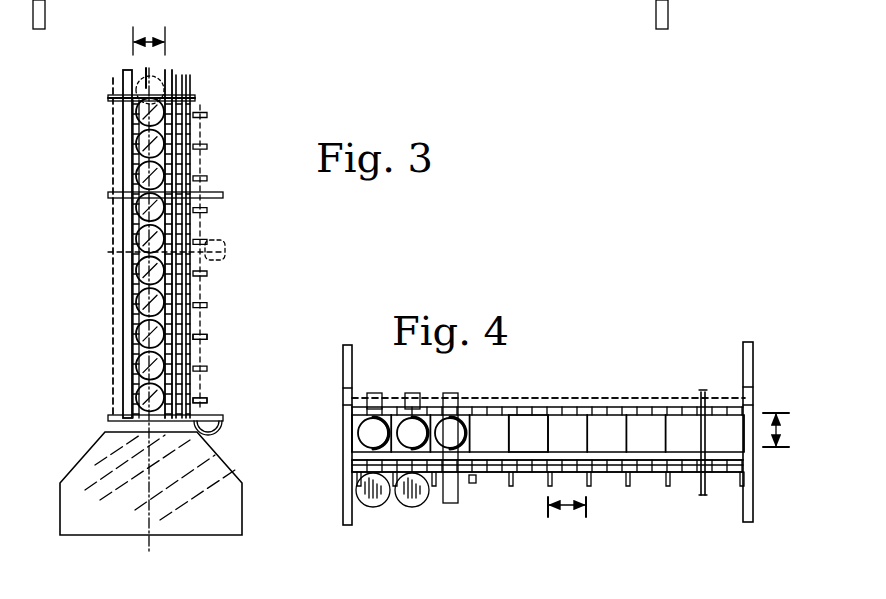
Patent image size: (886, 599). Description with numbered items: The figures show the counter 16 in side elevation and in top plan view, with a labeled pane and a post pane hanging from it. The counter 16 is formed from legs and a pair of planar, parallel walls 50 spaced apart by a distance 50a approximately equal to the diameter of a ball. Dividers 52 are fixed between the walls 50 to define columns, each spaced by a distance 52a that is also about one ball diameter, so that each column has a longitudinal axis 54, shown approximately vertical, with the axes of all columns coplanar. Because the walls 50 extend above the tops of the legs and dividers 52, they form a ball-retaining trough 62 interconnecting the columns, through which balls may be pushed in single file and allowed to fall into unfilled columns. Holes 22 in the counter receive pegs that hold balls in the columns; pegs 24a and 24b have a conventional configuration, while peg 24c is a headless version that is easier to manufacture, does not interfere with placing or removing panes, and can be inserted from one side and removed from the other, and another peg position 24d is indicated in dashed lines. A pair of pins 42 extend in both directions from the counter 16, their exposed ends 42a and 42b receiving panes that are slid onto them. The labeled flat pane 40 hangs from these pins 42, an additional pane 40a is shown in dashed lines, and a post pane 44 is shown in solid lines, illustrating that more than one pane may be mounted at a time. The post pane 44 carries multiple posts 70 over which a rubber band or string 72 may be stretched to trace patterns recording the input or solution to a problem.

In FIG. 3, the counter 16 is at (328, 230).
In FIG. 4, the counter 16 is at (752, 297).
In FIG. 4, the holes 22 is at (561, 408).
In FIG. 3, the peg 24a is at (220, 428).
In FIG. 4, the peg 24a is at (374, 504).
In FIG. 4, the peg 24b is at (413, 505).
In FIG. 3, the headless peg 24c is at (217, 197).
In FIG. 4, the headless peg 24c is at (450, 504).
In FIG. 3, the phantom support plate 24d is at (222, 257).
In FIG. 3, the labeled flat pane 40 is at (185, 76).
In FIG. 4, the labeled flat pane 40 is at (657, 468).
In FIG. 3, the pane 40a is at (113, 326).
In FIG. 4, the pane 40a is at (633, 398).
In FIG. 3, the pins 42 is at (160, 88).
In FIG. 4, the pins 42 is at (704, 432).
In FIG. 3, the pin end 42a is at (197, 98).
In FIG. 4, the pin end 42a is at (703, 494).
In FIG. 3, the pin end 42b is at (106, 98).
In FIG. 4, the pin end 42b is at (703, 390).
In FIG. 3, the post pane 44 is at (207, 148).
In FIG. 3, the walls 50 is at (126, 70).
In FIG. 4, the walls 50 is at (628, 411).
In FIG. 3, the wall spacing distance 50a is at (150, 42).
In FIG. 4, the wall spacing distance 50a is at (778, 430).
In FIG. 4, the dividers 52 is at (627, 437).
In FIG. 4, the divider spacing distance 52a is at (567, 506).
In FIG. 3, the longitudinal axis 54 is at (149, 548).
In FIG. 3, the ball-retaining trough 62 is at (140, 76).
In FIG. 3, the posts 70 is at (208, 337).
In FIG. 4, the posts 70 is at (511, 482).
In FIG. 3, the rubber band or string 72 is at (208, 385).
In FIG. 4, the rubber band or string 72 is at (478, 480).